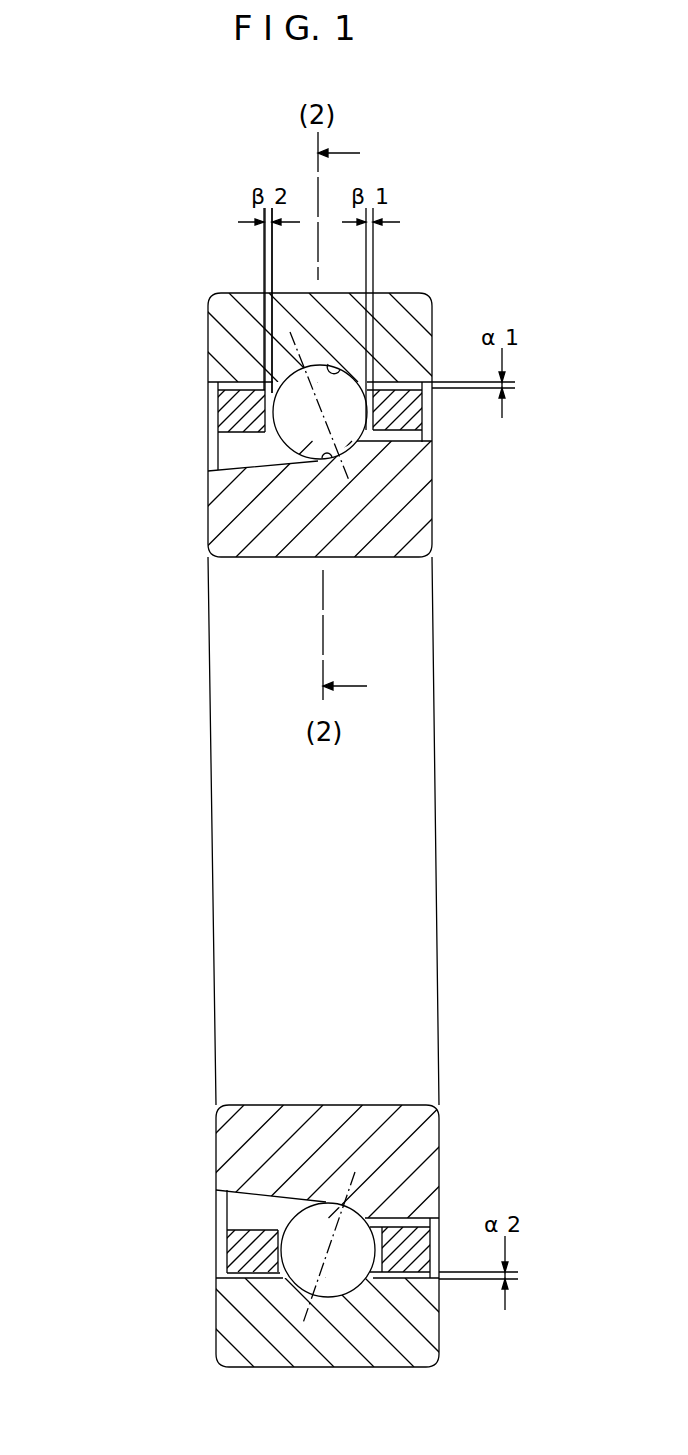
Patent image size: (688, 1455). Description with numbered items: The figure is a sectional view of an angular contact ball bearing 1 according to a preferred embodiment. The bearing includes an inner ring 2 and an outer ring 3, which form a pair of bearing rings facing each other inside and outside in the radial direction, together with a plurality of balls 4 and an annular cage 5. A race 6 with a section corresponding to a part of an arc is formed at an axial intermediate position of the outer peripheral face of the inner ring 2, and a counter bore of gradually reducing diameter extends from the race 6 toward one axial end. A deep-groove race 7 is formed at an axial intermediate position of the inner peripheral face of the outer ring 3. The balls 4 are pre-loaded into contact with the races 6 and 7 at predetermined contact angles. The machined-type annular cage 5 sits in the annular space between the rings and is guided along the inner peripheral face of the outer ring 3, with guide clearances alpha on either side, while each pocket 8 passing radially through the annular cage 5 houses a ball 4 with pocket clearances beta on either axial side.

The angular contact ball bearing 1 is at (168, 334).
The inner ring 2 is at (223, 510).
The outer ring 3 is at (220, 304).
The ball 4 is at (303, 446).
The annular cage 5 is at (223, 413).
The race 6 is at (327, 460).
The race 7 is at (329, 362).
The pocket 8 is at (348, 458).